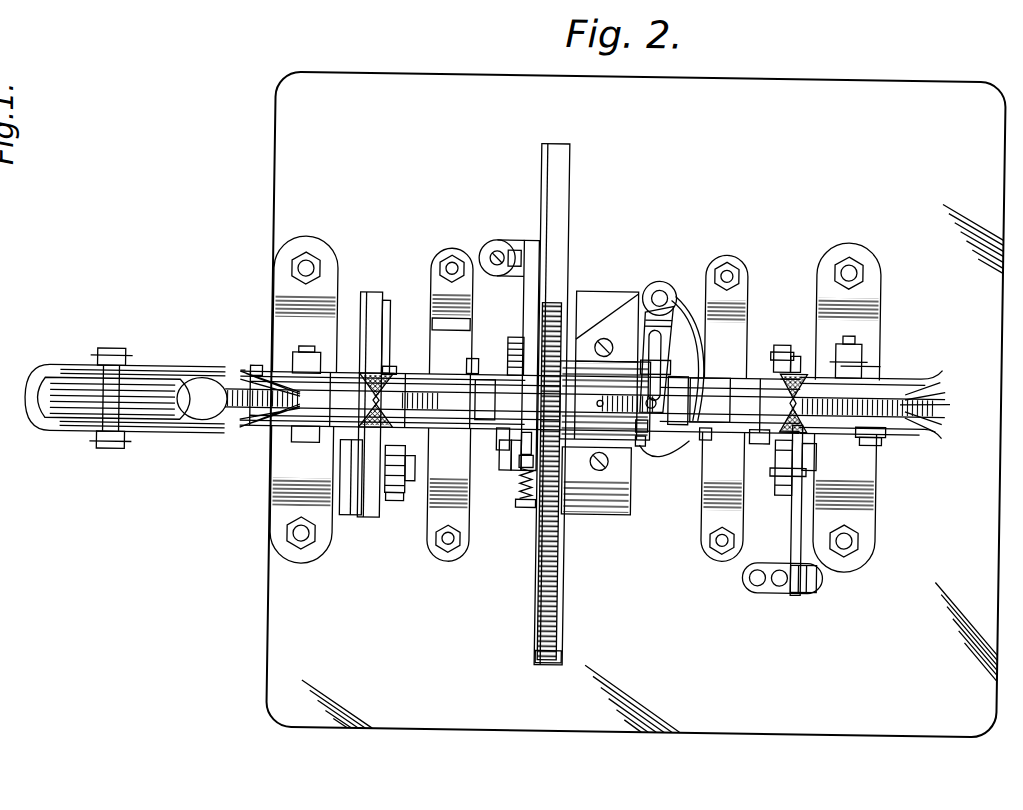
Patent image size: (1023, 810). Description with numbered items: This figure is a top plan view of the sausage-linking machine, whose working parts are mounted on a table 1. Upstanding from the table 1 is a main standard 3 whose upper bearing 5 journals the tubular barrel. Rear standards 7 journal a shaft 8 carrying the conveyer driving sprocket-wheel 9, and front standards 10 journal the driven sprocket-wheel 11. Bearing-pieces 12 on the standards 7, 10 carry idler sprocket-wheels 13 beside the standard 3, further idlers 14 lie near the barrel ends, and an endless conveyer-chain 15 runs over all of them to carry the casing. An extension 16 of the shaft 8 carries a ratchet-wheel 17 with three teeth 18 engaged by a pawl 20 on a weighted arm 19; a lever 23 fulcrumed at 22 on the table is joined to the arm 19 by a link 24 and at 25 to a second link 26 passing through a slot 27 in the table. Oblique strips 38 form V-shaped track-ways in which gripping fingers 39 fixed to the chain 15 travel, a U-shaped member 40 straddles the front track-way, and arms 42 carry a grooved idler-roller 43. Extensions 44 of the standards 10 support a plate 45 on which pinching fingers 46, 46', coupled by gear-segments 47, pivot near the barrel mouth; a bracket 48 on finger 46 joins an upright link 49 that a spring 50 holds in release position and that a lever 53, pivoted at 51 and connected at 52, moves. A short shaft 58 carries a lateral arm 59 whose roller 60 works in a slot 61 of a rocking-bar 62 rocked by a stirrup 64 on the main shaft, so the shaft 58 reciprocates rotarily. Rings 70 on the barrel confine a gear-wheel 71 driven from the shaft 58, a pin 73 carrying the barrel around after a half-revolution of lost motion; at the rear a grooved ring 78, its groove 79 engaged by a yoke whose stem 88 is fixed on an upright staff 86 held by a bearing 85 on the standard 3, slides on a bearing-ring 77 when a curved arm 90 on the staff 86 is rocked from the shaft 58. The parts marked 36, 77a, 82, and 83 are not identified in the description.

The table 1 is at (636, 405).
The main standard 3 is at (602, 472).
The split collar bearing 5 is at (592, 405).
The rear standards 7 is at (858, 575).
The shaft 8 is at (870, 442).
The conveyer driving sprocket-wheel 9 is at (875, 434).
The front standards 10 is at (447, 563).
The driven sprocket-wheel 11 is at (284, 420).
The bearing-pieces 12 is at (478, 426).
The idler sprocket-wheels 13 is at (492, 442).
The idler sprocket-wheels 14 is at (390, 380).
The endless conveyer-belt 15 is at (250, 415).
The shaft extension 16 is at (849, 343).
The ratchet-wheel 17 is at (876, 376).
The teeth 18 is at (874, 363).
The weighted arm 19 is at (790, 358).
The pawl 20 is at (820, 326).
The fulcrum 22 is at (797, 591).
The lever 23 is at (793, 503).
The connecting-rod 24 is at (778, 346).
The pivot connection 25 is at (817, 468).
The second link 26 is at (780, 486).
The slot 27 is at (778, 510).
The tube 36 is at (68, 440).
The strips 38 is at (236, 421).
The gripping fingers 39 is at (255, 371).
The U-shaped member 40 is at (330, 371).
The arms 42 is at (168, 373).
The grooved idler-roller 43 is at (132, 397).
The lateral extensions 44 is at (506, 472).
The plate 45 is at (515, 472).
The pinching finger 46 is at (500, 356).
The pinching finger 46' is at (504, 482).
The gear-segments 47 is at (468, 363).
The bracket 48 is at (523, 470).
The link 49 is at (528, 505).
The coiled spring 50 is at (522, 510).
The pivot 51 is at (512, 252).
The pivotal connection 52 is at (578, 513).
The lever 53 is at (527, 284).
The short shaft 58 is at (451, 328).
The lateral arm 59 is at (395, 500).
The roller 60 is at (355, 506).
The slot 61 is at (392, 506).
The rocking-bar 62 is at (374, 326).
The stirrup 64 is at (385, 349).
The collars 70 is at (660, 330).
The gear-wheel 71 is at (388, 370).
The pin 73 is at (683, 421).
The bearing-ring 77 is at (545, 618).
The bar end 77a is at (539, 660).
The sliding ring 78 is at (668, 458).
The annular groove 79 is at (642, 447).
The lug 82 is at (705, 440).
The hub 83 is at (630, 429).
The bearing 85 is at (607, 326).
The staff 86 is at (662, 290).
The stem 88 is at (672, 308).
The curved arm 90 is at (700, 336).